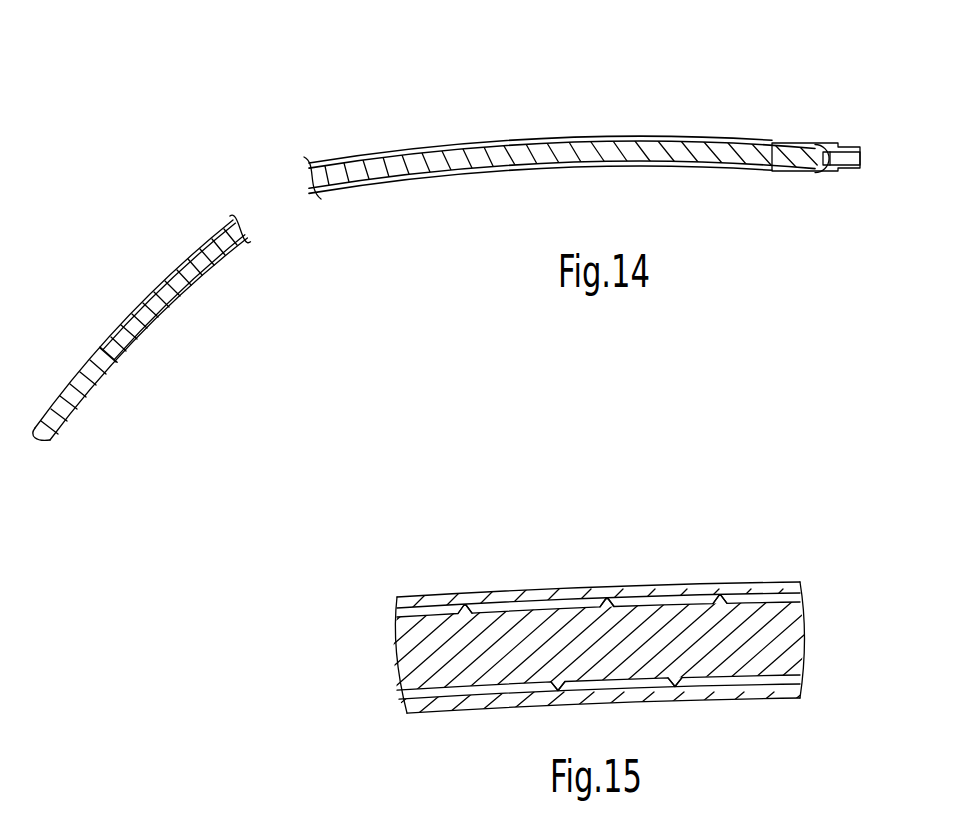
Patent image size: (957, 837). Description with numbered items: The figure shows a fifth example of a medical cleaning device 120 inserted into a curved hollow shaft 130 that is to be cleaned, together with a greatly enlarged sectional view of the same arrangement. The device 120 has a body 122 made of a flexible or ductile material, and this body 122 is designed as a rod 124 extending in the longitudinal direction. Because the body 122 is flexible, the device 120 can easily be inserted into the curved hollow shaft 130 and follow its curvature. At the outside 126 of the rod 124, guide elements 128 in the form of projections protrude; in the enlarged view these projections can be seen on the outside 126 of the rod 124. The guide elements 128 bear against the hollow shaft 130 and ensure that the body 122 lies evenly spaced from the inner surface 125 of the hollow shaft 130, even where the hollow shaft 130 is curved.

In FIG. 14, the device 120 is at (565, 130).
In FIG. 14, the body 122 is at (794, 151).
In FIG. 14, the rod 124 is at (76, 393).
In FIG. 15, the rod 124 is at (417, 657).
In FIG. 15, the inner surface 125 is at (517, 599).
In FIG. 15, the outside 126 is at (673, 598).
In FIG. 15, the guide elements 128 is at (465, 608).
In FIG. 14, the hollow shaft 130 is at (418, 147).
In FIG. 15, the hollow shaft 130 is at (559, 589).